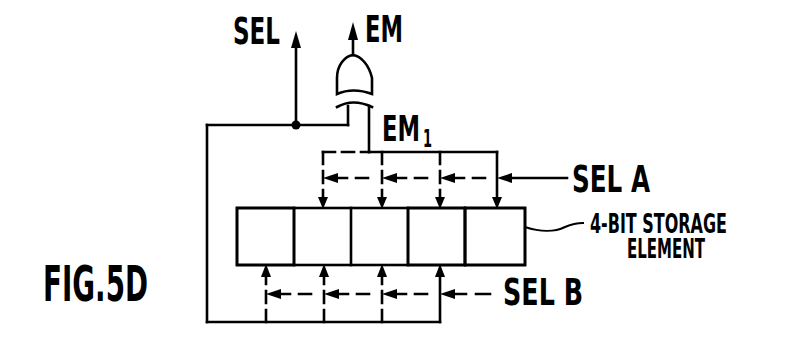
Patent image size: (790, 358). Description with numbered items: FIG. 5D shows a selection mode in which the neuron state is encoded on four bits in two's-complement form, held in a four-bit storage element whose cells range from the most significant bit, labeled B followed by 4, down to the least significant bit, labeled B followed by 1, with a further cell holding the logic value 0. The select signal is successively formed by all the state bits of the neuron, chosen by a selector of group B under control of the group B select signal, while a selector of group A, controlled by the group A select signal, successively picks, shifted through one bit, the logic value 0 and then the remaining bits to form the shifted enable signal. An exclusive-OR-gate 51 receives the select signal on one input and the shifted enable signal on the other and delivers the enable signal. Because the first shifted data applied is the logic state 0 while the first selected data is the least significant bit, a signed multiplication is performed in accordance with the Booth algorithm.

The exclusive-OR-gate 51 is at (372, 80).
The bit B4 storage cell 4 is at (265, 236).
The bit B1 storage cell 1 is at (436, 236).
The zero bit storage cell 0 is at (495, 236).